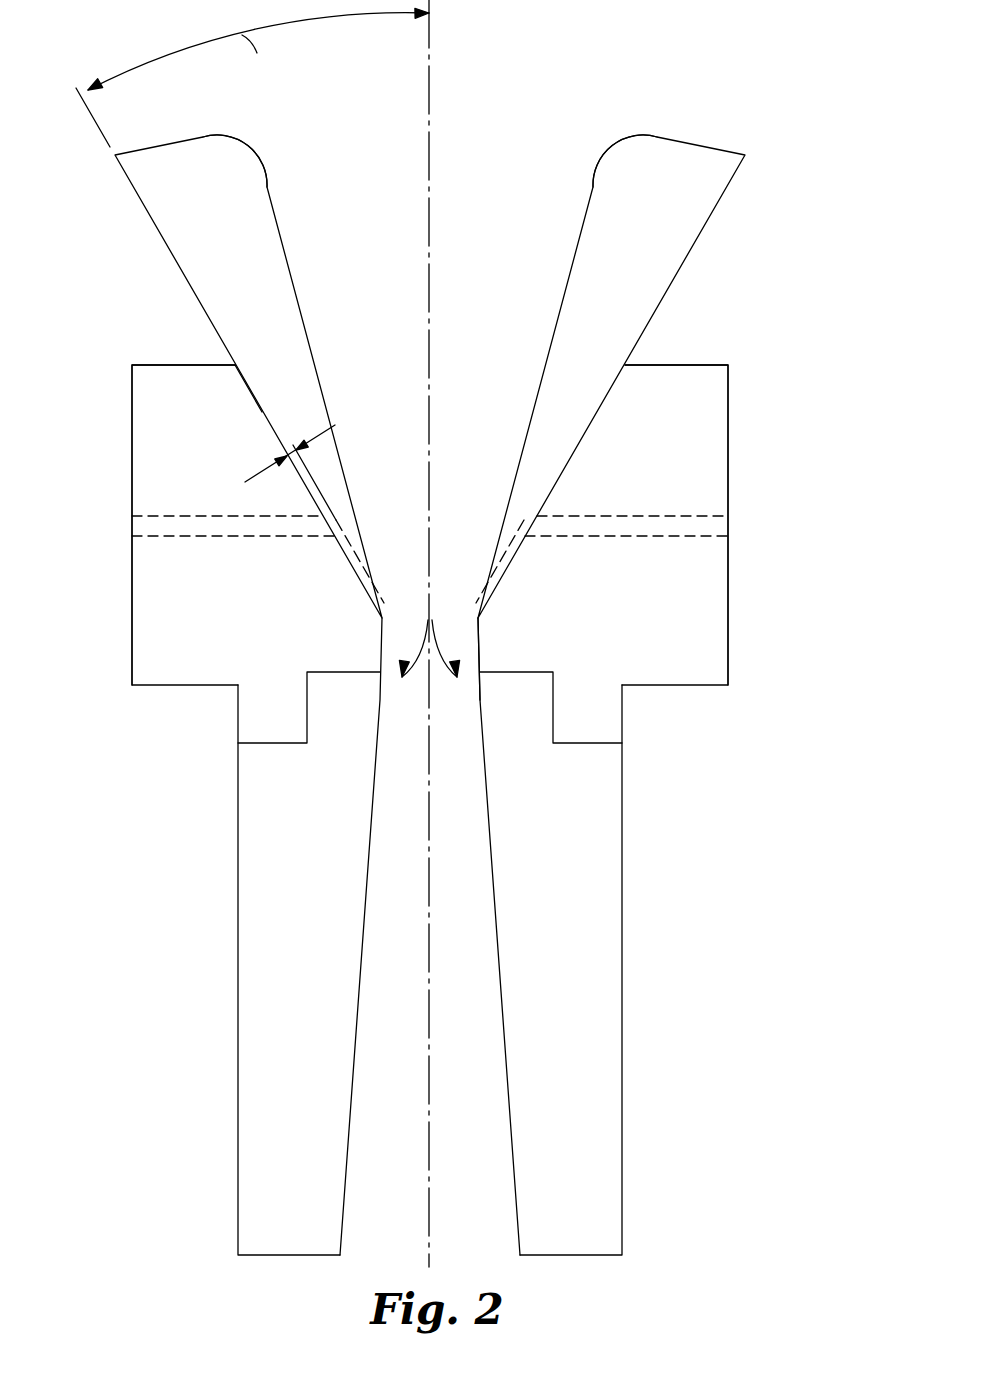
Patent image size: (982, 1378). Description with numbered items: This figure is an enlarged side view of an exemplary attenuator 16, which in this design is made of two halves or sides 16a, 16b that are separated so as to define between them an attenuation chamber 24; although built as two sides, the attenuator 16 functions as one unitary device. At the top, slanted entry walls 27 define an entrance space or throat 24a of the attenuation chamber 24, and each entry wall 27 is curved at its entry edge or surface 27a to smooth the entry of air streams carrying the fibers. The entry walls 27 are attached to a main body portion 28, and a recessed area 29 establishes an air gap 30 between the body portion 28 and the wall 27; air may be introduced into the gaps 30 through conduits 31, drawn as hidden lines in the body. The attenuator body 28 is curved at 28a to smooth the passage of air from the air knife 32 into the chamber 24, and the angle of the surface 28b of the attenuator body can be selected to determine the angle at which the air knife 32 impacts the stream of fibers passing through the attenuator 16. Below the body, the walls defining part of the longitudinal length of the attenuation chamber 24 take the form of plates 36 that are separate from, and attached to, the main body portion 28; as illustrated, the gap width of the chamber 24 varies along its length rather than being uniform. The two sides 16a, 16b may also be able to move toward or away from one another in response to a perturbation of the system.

The attenuator 16 is at (762, 63).
The side of attenuator 16a is at (658, 338).
The side of attenuator 16b is at (195, 337).
The attenuation chamber 24 is at (472, 810).
The entrance space or throat 24a is at (516, 306).
The slanted entry wall 27 is at (150, 198).
The entry edge or surface 27a is at (233, 143).
The main body portion 28 is at (143, 398).
The curved portion of attenuator body 28a is at (480, 625).
The surface of attenuator body 28b is at (262, 401).
The recessed area 29 is at (345, 555).
The air gap 30 is at (282, 458).
The conduit 31 is at (700, 515).
The air knife 32 is at (429, 632).
The plate 36 is at (608, 1007).